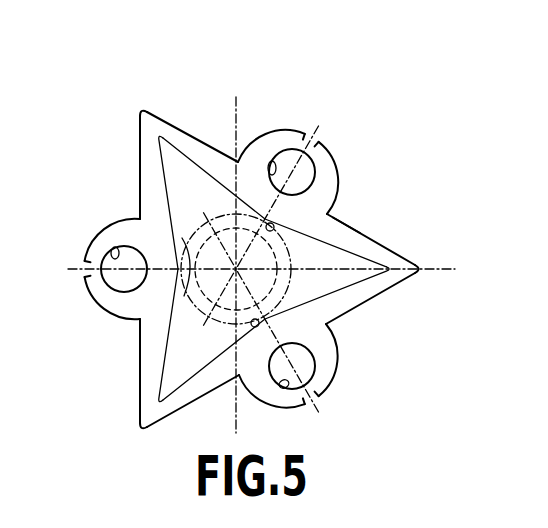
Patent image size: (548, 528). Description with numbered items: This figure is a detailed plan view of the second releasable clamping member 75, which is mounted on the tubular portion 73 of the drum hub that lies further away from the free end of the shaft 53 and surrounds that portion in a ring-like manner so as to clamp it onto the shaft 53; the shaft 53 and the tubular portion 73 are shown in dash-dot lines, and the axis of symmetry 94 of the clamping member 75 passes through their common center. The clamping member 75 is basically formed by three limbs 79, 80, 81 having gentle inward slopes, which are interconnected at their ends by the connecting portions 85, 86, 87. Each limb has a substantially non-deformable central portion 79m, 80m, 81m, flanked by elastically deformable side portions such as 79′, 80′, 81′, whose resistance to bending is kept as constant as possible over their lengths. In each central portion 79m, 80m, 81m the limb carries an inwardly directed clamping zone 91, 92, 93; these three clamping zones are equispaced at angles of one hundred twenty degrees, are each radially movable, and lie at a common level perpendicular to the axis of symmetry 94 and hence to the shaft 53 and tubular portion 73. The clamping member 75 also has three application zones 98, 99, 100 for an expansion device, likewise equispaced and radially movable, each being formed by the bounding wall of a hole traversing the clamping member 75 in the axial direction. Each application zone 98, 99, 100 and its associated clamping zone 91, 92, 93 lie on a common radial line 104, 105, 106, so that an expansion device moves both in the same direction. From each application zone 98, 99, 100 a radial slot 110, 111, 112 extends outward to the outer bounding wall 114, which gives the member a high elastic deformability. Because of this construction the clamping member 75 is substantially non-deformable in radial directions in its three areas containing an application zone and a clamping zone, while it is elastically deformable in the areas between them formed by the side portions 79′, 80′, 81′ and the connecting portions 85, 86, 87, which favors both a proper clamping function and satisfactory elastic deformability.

The clamping member 75 is at (249, 81).
The connecting portion 87 is at (147, 118).
The limb 79 is at (227, 173).
The side portion 79′ is at (186, 140).
The central portion 79m is at (336, 193).
The radial slot 110 is at (311, 136).
The radial line 104 is at (315, 140).
The outer bounding wall 114 is at (343, 213).
The connecting portion 85 is at (423, 271).
The side portion 80′ is at (378, 290).
The limb 80 is at (330, 307).
The central portion 80m is at (333, 333).
The radial line 105 is at (324, 413).
The radial slot 111 is at (305, 400).
The connecting portion 86 is at (140, 433).
The limb 81 is at (147, 343).
The side portion 81′ is at (147, 385).
The central portion 81m is at (139, 320).
The radial line 106 is at (84, 277).
The radial slot 112 is at (84, 262).
The application zone 98 is at (271, 162).
The application zone 99 is at (284, 386).
The application zone 100 is at (115, 250).
The shaft 53 is at (210, 245).
The tubular portion 73 is at (288, 288).
The axis of symmetry 94 is at (236, 270).
The clamping zone 91 is at (272, 232).
The clamping zone 92 is at (257, 325).
The clamping zone 93 is at (183, 240).